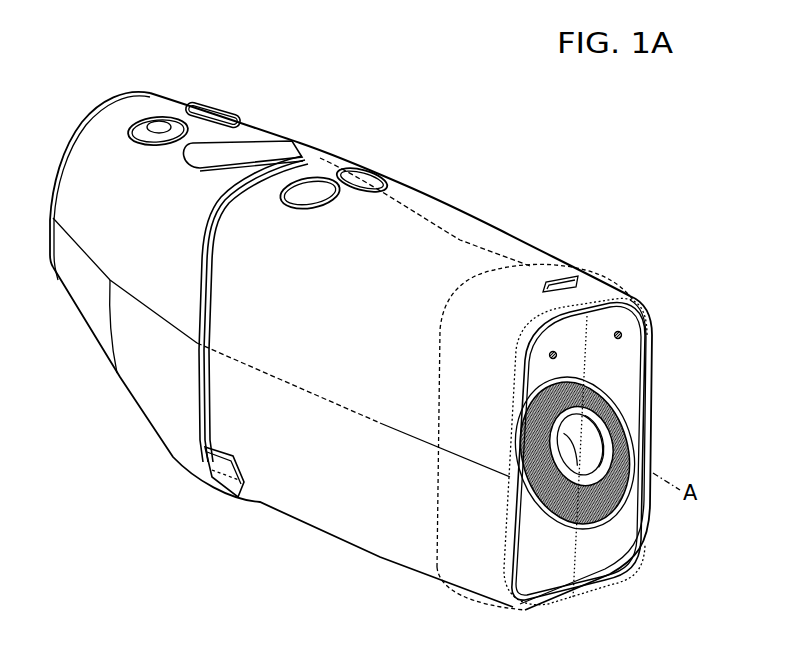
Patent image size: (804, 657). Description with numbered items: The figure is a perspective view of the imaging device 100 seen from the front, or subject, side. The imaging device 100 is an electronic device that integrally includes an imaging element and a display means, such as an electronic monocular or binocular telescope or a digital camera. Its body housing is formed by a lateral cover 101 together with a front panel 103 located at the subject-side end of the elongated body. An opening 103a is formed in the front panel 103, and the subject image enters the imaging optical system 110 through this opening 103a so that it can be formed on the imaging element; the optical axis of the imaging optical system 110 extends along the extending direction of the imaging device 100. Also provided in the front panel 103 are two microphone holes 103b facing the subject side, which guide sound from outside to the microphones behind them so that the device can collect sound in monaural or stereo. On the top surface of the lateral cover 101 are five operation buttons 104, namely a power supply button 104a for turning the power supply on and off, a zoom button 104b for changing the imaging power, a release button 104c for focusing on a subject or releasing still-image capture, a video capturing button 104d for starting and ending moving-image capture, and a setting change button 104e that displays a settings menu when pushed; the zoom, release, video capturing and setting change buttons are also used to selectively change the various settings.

The imaging device 100 is at (598, 174).
The lateral cover 101 is at (433, 217).
The front panel 103 is at (630, 358).
The opening 103a is at (600, 442).
The microphone holes 103b is at (618, 331).
The operation buttons 104 is at (450, 60).
The power supply button 104a is at (310, 190).
The zoom button 104b is at (260, 142).
The release button 104c is at (207, 113).
The video capturing button 104d is at (137, 124).
The setting change button 104e is at (363, 178).
The imaging optical system 110 is at (643, 418).